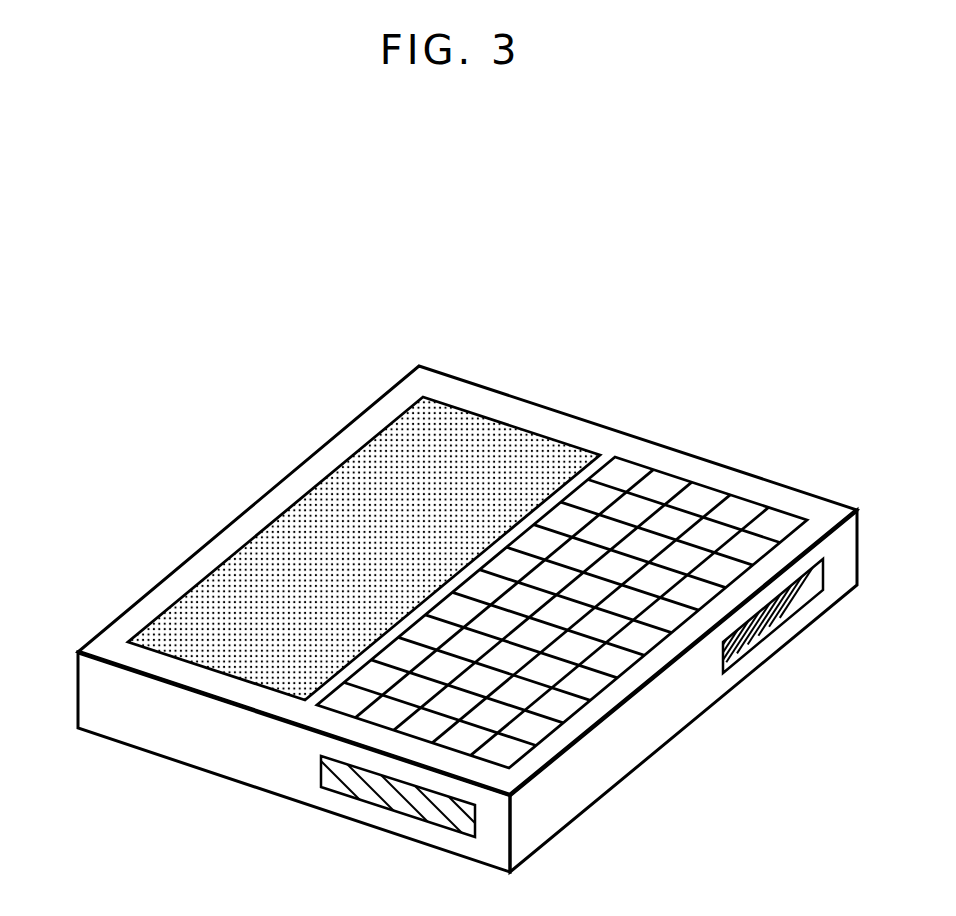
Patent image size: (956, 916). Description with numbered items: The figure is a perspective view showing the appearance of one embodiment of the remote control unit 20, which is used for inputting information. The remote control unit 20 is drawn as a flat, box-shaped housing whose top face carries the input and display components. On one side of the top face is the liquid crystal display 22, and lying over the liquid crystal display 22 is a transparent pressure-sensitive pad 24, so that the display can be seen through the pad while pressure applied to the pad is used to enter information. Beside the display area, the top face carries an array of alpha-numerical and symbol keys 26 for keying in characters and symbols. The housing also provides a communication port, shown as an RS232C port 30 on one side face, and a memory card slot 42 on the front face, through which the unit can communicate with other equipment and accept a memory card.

The remote control unit 20 is at (155, 733).
The liquid crystal display 22 is at (490, 428).
The transparent pressure-sensitive pad 24 is at (328, 475).
The alpha-numerical and symbol keys 26 is at (663, 488).
The RS232C port 30 is at (778, 618).
The memory card slot 42 is at (380, 797).